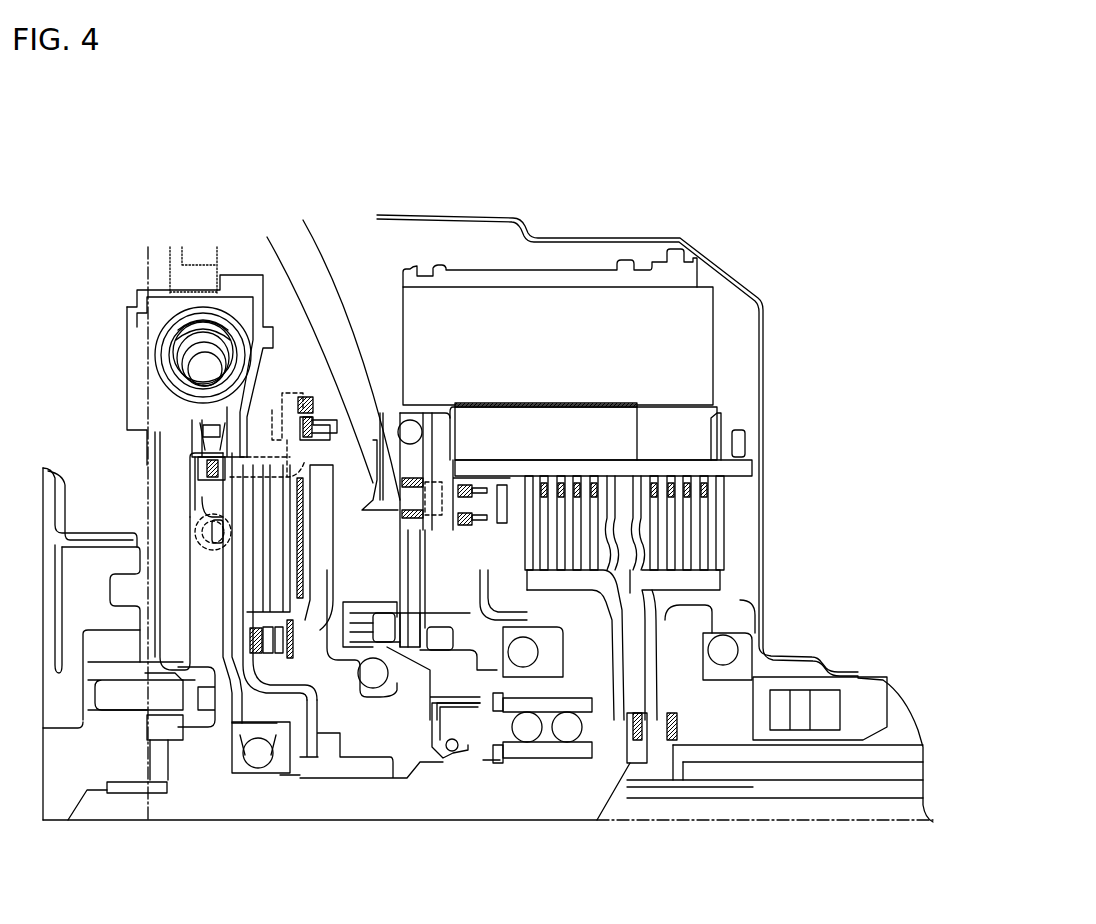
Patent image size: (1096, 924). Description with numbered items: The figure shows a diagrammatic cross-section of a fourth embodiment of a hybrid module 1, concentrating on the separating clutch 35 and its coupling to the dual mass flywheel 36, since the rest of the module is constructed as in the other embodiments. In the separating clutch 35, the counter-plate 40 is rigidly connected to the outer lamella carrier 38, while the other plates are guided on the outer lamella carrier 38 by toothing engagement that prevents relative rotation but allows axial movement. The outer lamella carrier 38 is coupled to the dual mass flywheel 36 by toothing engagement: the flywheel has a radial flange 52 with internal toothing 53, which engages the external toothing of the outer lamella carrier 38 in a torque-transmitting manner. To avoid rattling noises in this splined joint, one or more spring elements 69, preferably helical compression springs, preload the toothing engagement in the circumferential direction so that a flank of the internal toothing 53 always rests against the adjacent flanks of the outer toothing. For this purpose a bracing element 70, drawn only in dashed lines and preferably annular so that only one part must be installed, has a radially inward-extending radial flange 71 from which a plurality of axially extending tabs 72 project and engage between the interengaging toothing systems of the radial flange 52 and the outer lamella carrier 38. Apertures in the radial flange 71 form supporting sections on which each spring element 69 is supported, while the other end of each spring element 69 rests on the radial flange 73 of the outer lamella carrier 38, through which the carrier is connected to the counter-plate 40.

The hybrid module 1 is at (598, 198).
The separating clutch 35 is at (303, 392).
The dual mass flywheel 36 is at (171, 237).
The outer lamella carrier 38 is at (257, 457).
The counter-plate 40 is at (233, 640).
The radial flange 52 is at (207, 433).
The internal toothing 53 is at (205, 462).
The spring element 69 is at (217, 548).
The bracing element 70 is at (200, 507).
The radial flange 71 is at (203, 555).
The tabs 72 is at (217, 468).
The radial flange 73 is at (227, 508).